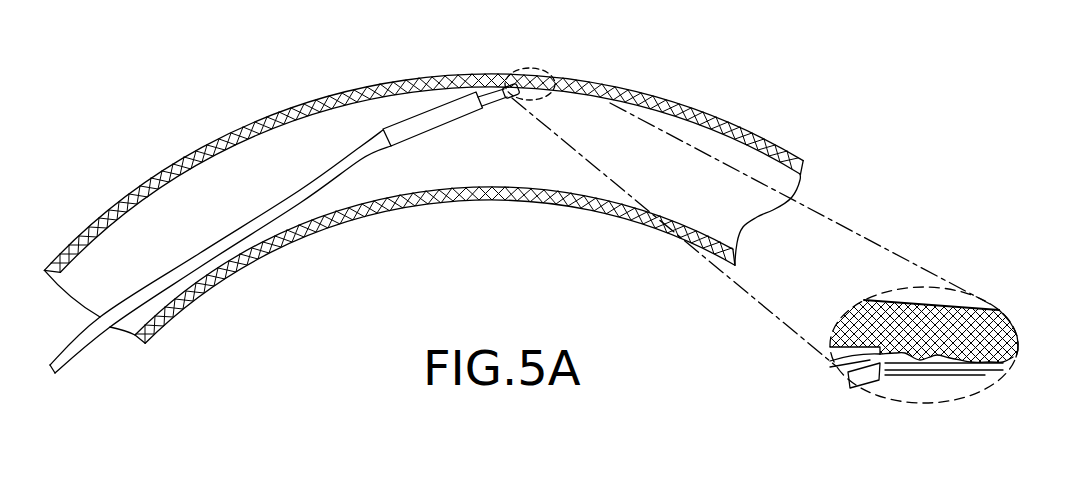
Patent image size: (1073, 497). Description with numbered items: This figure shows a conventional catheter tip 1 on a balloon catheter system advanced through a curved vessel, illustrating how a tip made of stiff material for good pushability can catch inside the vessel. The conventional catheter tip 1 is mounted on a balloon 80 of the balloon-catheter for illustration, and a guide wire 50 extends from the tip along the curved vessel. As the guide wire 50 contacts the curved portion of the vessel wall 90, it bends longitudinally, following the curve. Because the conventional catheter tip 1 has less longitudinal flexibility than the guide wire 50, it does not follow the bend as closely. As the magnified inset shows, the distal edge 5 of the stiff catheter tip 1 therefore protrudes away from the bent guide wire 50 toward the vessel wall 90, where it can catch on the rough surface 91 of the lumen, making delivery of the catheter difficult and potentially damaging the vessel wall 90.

The conventional catheter tip 1 is at (495, 97).
The distal edge 5 is at (850, 372).
The guide wire 50 is at (605, 100).
The balloon 80 is at (423, 123).
The vessel wall 90 is at (642, 217).
The rough surface 91 is at (887, 371).